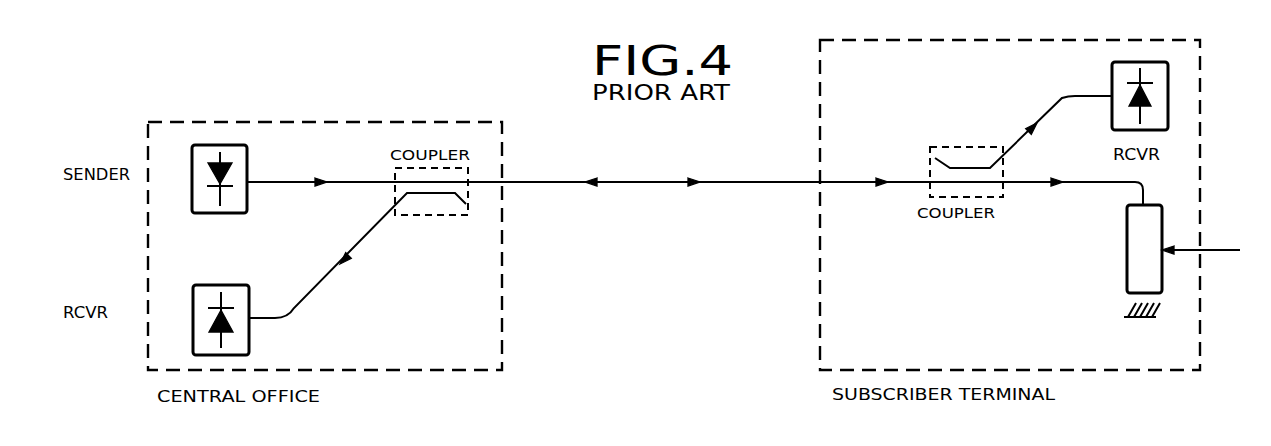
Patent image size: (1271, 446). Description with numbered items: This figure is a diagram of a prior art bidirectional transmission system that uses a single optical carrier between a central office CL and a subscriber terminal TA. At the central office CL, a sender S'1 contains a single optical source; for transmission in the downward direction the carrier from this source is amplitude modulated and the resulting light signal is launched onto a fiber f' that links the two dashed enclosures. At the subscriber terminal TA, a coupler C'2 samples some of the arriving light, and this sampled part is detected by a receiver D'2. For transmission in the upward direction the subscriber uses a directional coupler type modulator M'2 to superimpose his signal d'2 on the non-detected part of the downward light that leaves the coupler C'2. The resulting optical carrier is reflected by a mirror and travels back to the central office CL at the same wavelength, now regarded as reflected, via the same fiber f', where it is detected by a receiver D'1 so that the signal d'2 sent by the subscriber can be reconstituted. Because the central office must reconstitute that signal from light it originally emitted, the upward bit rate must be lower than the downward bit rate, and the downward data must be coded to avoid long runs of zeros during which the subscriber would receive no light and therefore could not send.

The central office CL is at (344, 122).
The subscriber terminal TA is at (1022, 40).
The sender S'1 is at (243, 191).
The receiver D'1 is at (213, 294).
The coupler C'2 is at (1017, 140).
The receiver D'2 is at (1113, 90).
The directional coupler type modulator M'2 is at (1114, 261).
The signal d'2 is at (1201, 226).
The fiber f' is at (640, 202).